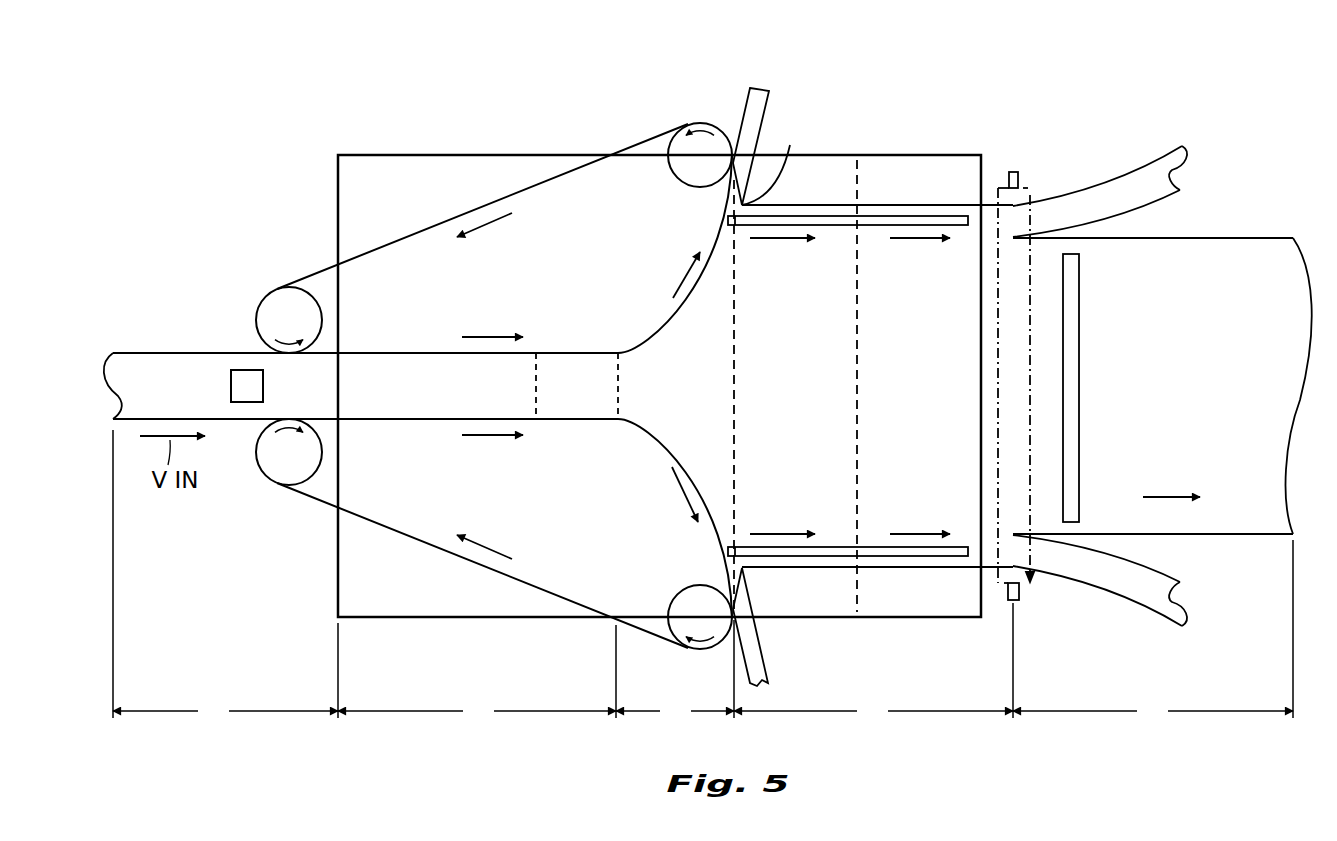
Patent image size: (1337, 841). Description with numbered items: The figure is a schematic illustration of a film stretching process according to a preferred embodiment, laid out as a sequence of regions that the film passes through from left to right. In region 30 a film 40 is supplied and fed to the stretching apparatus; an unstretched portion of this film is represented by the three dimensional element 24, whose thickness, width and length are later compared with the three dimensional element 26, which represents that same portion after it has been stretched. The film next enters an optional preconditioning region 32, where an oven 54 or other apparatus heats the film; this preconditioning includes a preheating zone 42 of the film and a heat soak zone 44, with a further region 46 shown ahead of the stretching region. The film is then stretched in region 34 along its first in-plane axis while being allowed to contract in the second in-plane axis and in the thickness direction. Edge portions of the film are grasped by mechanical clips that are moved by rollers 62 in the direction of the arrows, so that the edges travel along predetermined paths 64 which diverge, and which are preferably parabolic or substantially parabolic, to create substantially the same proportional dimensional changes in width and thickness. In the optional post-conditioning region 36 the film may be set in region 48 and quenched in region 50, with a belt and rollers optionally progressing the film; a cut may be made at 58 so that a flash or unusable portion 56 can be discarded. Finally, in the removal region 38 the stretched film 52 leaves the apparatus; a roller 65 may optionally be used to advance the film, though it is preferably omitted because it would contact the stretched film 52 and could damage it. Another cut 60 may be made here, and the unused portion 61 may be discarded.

The three dimensional element 24 is at (245, 383).
The three dimensional element 26 is at (1073, 297).
The film supplying step 30 is at (225, 577).
The preconditioning step 32 is at (477, 674).
The stretching step 34 is at (675, 672).
The post-conditioning step 36 is at (873, 663).
The film removal step 38 is at (1153, 632).
The film 40 is at (157, 398).
The preheating zone 42 is at (428, 398).
The heat soak zone 44 is at (560, 398).
The web section 46 is at (667, 398).
The setting region 48 is at (784, 398).
The quenching region 50 is at (903, 398).
The stretched film 52 is at (1184, 398).
The oven 54 is at (508, 155).
The flash or unusable portion 56 is at (757, 90).
The cut 58 is at (773, 161).
The cut 60 is at (1013, 237).
The unused portion 61 is at (1120, 190).
The rollers 62 is at (274, 299).
The predetermined paths 64 is at (658, 335).
The roller 65 is at (1033, 583).